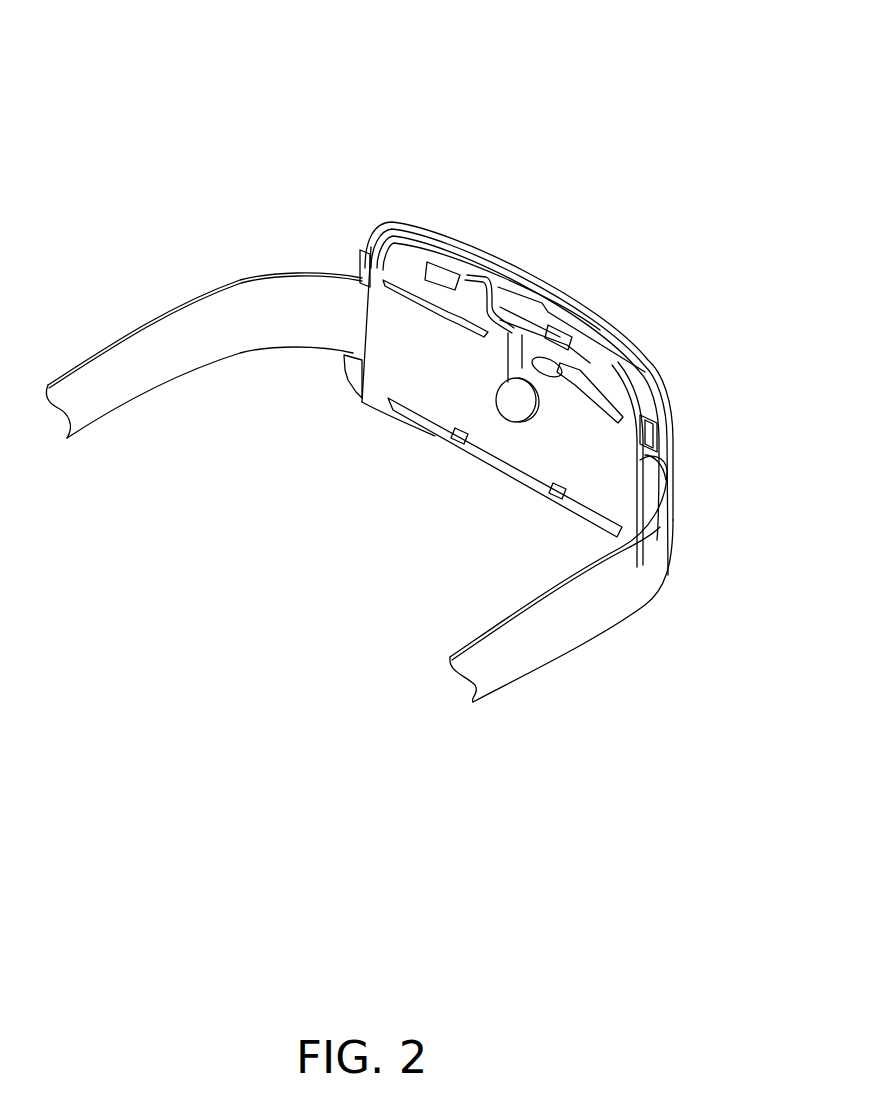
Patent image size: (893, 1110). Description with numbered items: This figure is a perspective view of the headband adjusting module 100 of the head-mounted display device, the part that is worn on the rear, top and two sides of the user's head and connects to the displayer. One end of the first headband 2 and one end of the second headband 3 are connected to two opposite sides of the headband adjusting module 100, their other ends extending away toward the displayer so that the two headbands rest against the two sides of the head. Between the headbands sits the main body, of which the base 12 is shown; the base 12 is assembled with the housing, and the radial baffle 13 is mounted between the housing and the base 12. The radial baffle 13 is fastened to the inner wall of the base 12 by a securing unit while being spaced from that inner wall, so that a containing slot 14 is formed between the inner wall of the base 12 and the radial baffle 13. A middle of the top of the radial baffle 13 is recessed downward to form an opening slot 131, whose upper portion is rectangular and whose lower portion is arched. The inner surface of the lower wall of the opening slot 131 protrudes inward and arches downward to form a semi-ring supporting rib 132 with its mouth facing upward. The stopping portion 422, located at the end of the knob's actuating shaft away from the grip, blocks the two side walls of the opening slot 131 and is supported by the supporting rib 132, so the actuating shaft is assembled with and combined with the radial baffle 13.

The headband adjusting module 100 is at (83, 40).
The first headband 2 is at (565, 642).
The second headband 3 is at (130, 358).
The base 12 is at (428, 232).
The radial baffle 13 is at (383, 320).
The opening slot 131 is at (528, 368).
The supporting rib 132 is at (525, 422).
The containing slot 14 is at (647, 495).
The stopping portion 422 is at (517, 405).